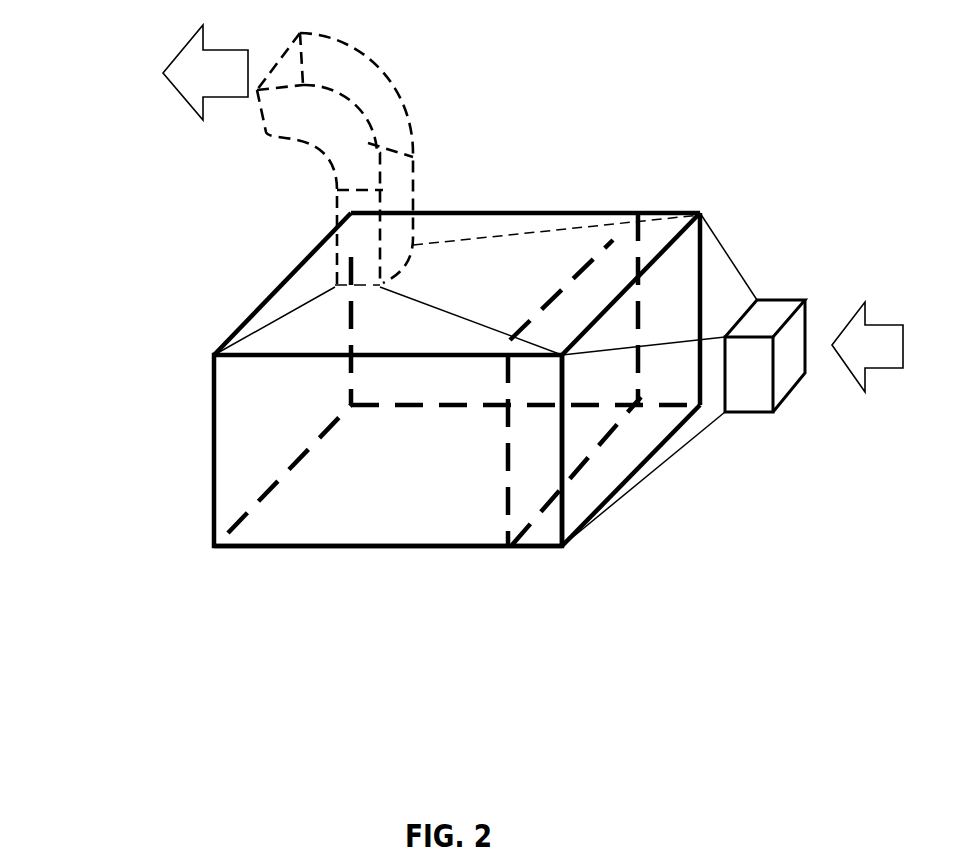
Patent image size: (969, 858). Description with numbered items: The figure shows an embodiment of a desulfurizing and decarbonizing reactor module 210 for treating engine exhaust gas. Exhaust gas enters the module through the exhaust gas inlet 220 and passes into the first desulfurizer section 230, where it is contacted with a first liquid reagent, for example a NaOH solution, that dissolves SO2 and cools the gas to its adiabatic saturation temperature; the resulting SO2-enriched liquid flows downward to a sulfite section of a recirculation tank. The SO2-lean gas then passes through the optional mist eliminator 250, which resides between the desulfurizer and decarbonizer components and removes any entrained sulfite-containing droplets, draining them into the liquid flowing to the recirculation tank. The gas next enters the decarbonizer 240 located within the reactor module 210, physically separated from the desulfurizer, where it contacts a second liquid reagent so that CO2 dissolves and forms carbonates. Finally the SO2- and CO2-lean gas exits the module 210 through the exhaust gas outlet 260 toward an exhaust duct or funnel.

The desulfurizing and decarbonizing reactor module 210 is at (192, 474).
The exhaust gas inlet 220 is at (798, 416).
The first desulfurizer section 230 is at (545, 567).
The decarbonizer 240 is at (368, 567).
The mist eliminator 250 is at (575, 452).
The exhaust gas outlet 260 is at (432, 170).